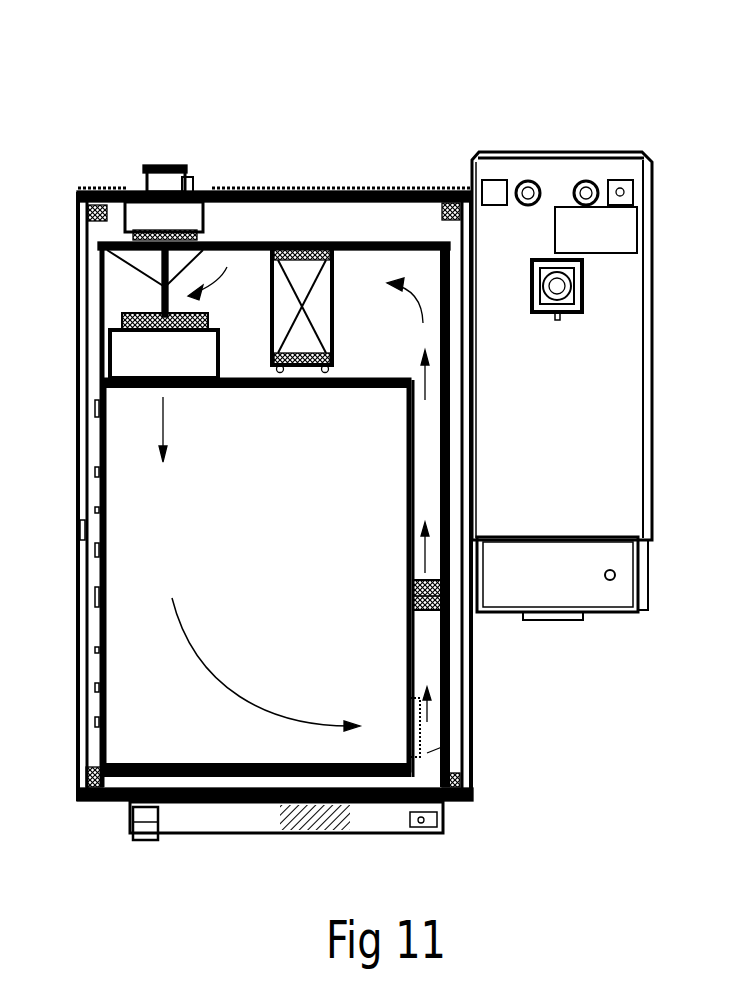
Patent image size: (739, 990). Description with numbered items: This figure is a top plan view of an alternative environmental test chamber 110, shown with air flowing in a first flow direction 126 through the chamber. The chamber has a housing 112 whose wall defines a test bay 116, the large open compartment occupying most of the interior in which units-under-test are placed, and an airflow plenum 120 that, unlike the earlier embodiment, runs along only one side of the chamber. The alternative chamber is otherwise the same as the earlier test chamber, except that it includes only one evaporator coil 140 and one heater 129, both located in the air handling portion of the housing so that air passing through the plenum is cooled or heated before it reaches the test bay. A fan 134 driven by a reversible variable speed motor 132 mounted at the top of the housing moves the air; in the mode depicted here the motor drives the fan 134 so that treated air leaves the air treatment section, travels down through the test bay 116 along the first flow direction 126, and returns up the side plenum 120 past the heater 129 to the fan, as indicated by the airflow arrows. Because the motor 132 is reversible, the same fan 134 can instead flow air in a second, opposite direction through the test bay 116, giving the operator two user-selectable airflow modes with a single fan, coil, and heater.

The environmental test chamber 110 is at (478, 50).
The housing 112 is at (365, 176).
The test bay 116 is at (363, 493).
The airflow plenum 120 is at (423, 667).
The first flow direction 126 is at (227, 690).
The heater 129 is at (430, 607).
The reversible variable speed motor 132 is at (163, 160).
The fan 134 is at (192, 313).
The evaporator coil 140 is at (333, 313).